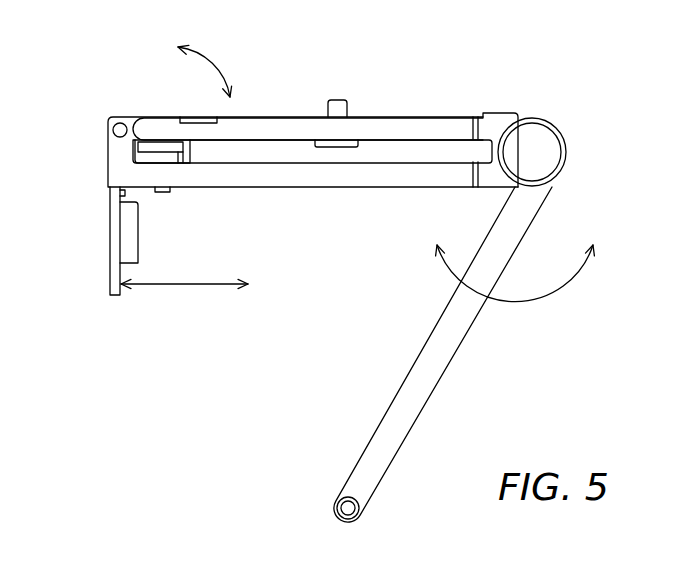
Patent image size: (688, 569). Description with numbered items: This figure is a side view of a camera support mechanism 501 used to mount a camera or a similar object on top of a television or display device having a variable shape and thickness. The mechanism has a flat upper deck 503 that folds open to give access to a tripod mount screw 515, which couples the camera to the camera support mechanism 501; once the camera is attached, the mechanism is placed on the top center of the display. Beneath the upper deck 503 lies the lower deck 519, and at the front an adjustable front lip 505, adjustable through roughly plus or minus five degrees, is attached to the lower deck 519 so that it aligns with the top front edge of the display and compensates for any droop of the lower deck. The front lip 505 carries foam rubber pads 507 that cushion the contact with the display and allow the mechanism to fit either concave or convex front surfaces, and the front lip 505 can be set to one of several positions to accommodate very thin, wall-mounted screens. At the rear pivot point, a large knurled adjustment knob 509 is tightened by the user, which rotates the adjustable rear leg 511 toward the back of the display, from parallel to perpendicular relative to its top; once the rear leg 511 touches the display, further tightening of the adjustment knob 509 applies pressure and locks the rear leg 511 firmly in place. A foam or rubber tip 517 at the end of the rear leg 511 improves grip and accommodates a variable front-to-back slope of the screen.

The camera support mechanism 501 is at (523, 90).
The upper deck 503 is at (268, 118).
The adjustable front lip 505 is at (113, 280).
The foam rubber pad 507 is at (135, 227).
The adjustment knob 509 is at (567, 150).
The adjustable rear leg 511 is at (455, 345).
The tripod mount screw 515 is at (342, 99).
The foam/rubber tip 517 is at (333, 518).
The lower deck 519 is at (357, 188).